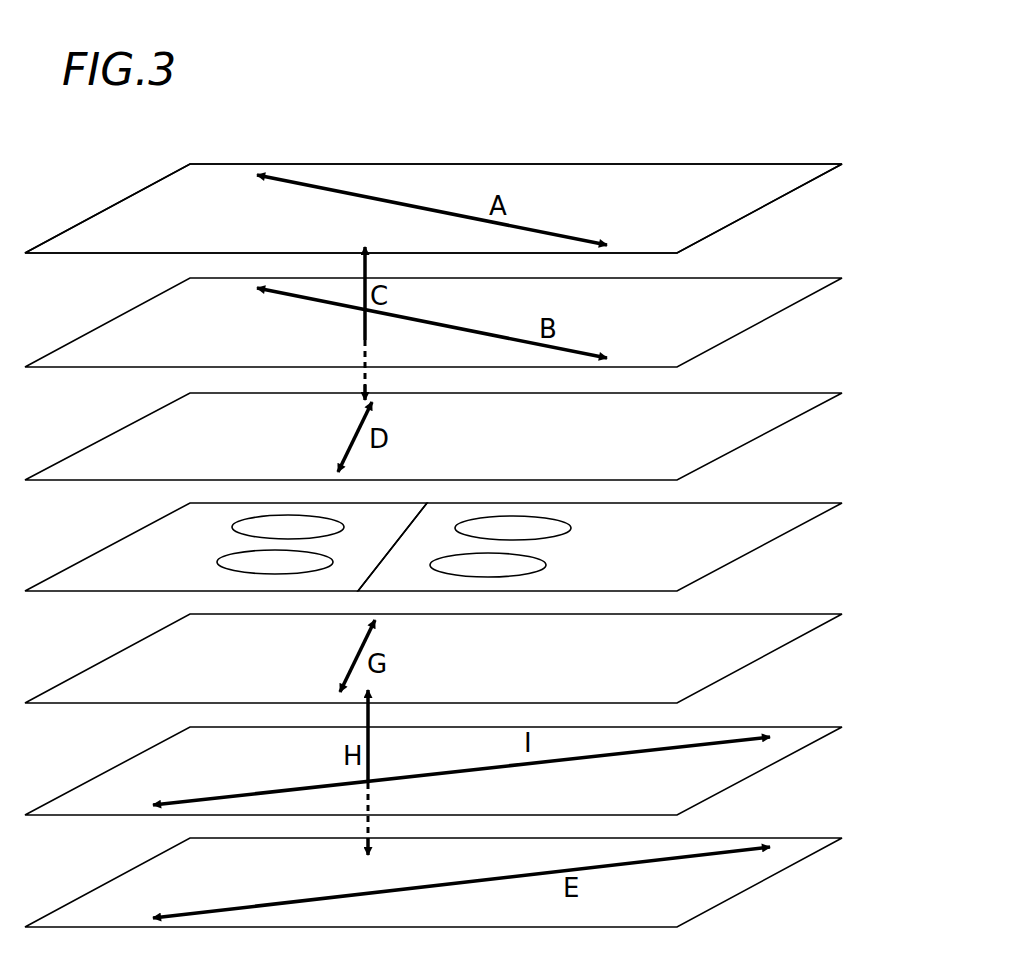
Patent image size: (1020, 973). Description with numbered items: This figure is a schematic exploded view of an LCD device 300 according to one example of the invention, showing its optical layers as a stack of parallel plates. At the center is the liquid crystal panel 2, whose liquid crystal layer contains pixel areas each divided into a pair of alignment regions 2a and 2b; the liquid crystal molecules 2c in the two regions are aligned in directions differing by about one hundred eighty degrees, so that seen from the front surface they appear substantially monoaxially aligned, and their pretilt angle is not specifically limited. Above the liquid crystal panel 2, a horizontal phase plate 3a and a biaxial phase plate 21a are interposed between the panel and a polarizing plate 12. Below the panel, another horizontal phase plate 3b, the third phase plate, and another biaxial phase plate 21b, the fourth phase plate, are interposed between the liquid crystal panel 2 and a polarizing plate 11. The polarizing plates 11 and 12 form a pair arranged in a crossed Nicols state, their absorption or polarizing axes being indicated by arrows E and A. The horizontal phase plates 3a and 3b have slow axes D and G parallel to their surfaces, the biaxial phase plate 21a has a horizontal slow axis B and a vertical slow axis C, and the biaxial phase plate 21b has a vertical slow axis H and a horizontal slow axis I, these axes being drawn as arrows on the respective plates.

The LCD device 300 is at (673, 128).
The polarizing plate 12 is at (760, 208).
The biaxial phase plate 21a is at (795, 305).
The horizontal phase plate 3a is at (777, 428).
The liquid crystal panel 2 is at (437, 552).
The alignment region 2a is at (143, 553).
The alignment region 2b is at (700, 560).
The liquid crystal molecules 2c is at (530, 565).
The horizontal phase plate 3b is at (807, 637).
The biaxial phase plate 21b is at (813, 743).
The polarizing plate 11 is at (813, 855).